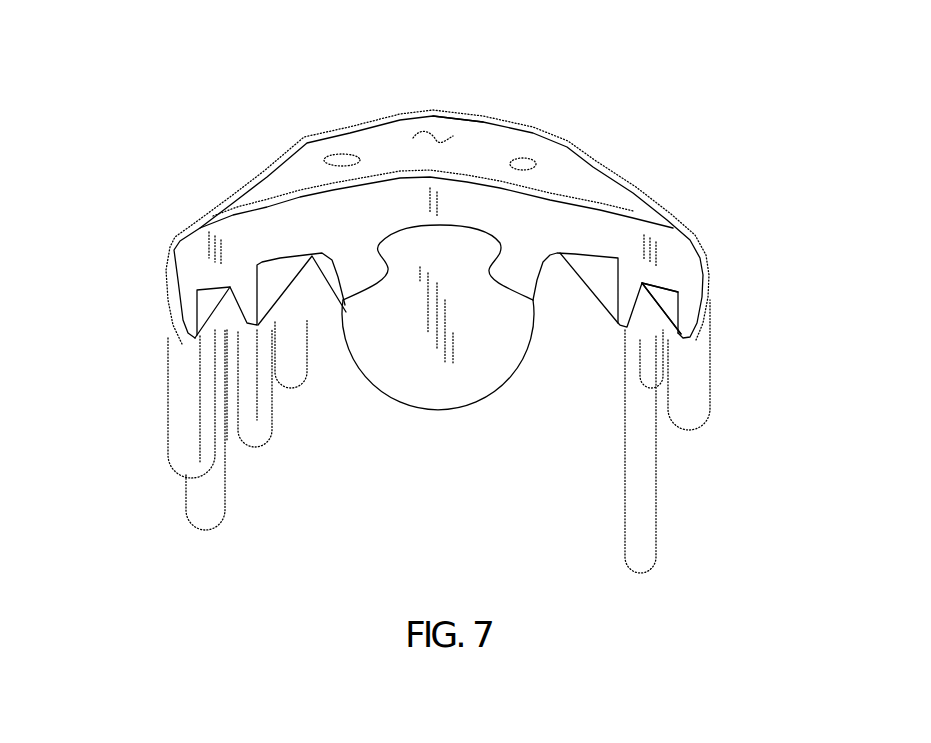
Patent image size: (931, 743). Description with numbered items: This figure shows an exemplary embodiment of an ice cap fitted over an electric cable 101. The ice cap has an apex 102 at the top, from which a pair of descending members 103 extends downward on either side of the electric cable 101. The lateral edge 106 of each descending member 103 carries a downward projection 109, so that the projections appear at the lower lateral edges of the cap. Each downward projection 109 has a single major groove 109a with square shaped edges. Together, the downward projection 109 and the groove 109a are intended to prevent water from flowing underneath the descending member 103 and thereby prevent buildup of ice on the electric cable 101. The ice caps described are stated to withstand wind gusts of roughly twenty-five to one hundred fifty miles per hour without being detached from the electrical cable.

The electric cable 101 is at (458, 383).
The apex 102 is at (458, 137).
The descending member 103 is at (248, 170).
The lateral edge 106 is at (168, 272).
The downward projection 109 is at (247, 323).
The major groove 109a is at (650, 306).